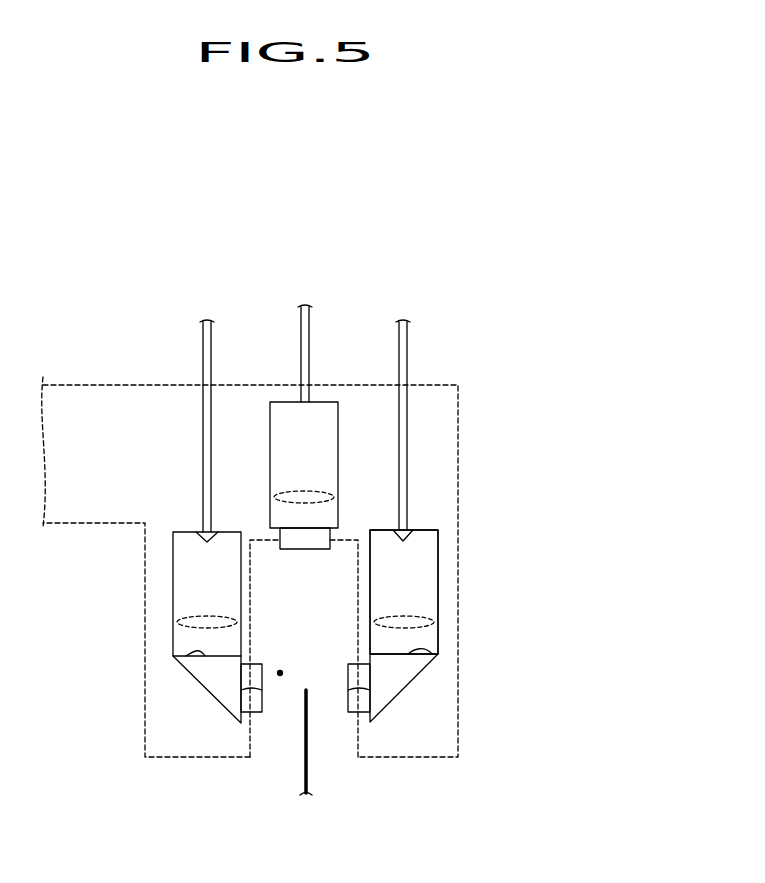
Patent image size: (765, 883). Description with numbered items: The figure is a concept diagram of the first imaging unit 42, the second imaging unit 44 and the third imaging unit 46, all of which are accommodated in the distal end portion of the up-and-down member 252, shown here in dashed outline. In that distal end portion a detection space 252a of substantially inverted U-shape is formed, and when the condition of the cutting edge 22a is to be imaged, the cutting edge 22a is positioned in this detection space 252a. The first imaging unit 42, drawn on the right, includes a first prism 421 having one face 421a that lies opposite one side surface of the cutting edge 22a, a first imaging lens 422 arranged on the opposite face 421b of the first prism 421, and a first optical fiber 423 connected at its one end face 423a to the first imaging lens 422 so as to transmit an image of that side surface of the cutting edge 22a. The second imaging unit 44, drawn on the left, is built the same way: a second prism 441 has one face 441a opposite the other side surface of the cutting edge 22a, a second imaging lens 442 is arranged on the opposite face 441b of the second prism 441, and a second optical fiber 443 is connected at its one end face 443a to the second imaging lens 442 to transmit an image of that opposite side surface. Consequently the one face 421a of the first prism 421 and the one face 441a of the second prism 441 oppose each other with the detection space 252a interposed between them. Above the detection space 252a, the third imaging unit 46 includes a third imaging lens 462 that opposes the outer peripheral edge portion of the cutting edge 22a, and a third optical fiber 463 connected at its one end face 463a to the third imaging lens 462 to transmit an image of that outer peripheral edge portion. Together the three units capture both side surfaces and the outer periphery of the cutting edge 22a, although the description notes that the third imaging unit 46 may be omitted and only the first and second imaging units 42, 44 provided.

The cutting edge 22a is at (312, 772).
The first imaging unit 42 is at (446, 574).
The first prism 421 is at (395, 680).
The one face of the first prism 421a is at (348, 698).
The opposite face of the first prism 421b is at (408, 653).
The first imaging lens 422 is at (455, 592).
The first optical fiber 423 is at (410, 343).
The one end face of the first optical fiber 423a is at (408, 540).
The second imaging unit 44 is at (301, 566).
The second prism 441 is at (212, 682).
The one face of the second prism 441a is at (262, 698).
The opposite face of the second prism 441b is at (197, 652).
The second imaging lens 442 is at (180, 615).
The second optical fiber 443 is at (197, 350).
The one end face of the second optical fiber 443a is at (197, 532).
The third imaging unit 46 is at (311, 411).
The third imaging lens 462 is at (285, 487).
The third optical fiber 463 is at (312, 330).
The one end face of the third optical fiber 463a is at (305, 405).
The up-and-down member 252 is at (450, 383).
The detection space 252a is at (280, 676).